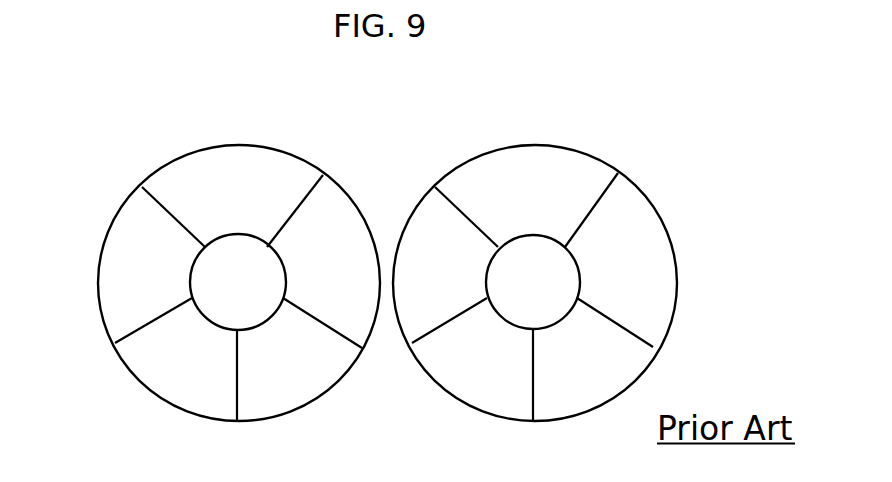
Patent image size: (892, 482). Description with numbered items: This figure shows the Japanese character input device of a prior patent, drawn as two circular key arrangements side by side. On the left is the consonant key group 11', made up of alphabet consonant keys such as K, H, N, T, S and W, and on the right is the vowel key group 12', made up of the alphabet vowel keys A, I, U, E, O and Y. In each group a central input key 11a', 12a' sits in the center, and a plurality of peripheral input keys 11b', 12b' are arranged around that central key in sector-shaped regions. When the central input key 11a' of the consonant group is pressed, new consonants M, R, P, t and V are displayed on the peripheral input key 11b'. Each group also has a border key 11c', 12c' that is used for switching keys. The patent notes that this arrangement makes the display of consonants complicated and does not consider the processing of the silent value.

The consonant key group 11' is at (220, 262).
The central input key 11a' is at (304, 187).
The peripheral input key 11b' is at (179, 174).
The border key 11c' is at (250, 212).
The vowel key group 12' is at (526, 261).
The central input key 12a' is at (635, 221).
The peripheral input key 12b' is at (469, 174).
The border key 12c' is at (551, 211).